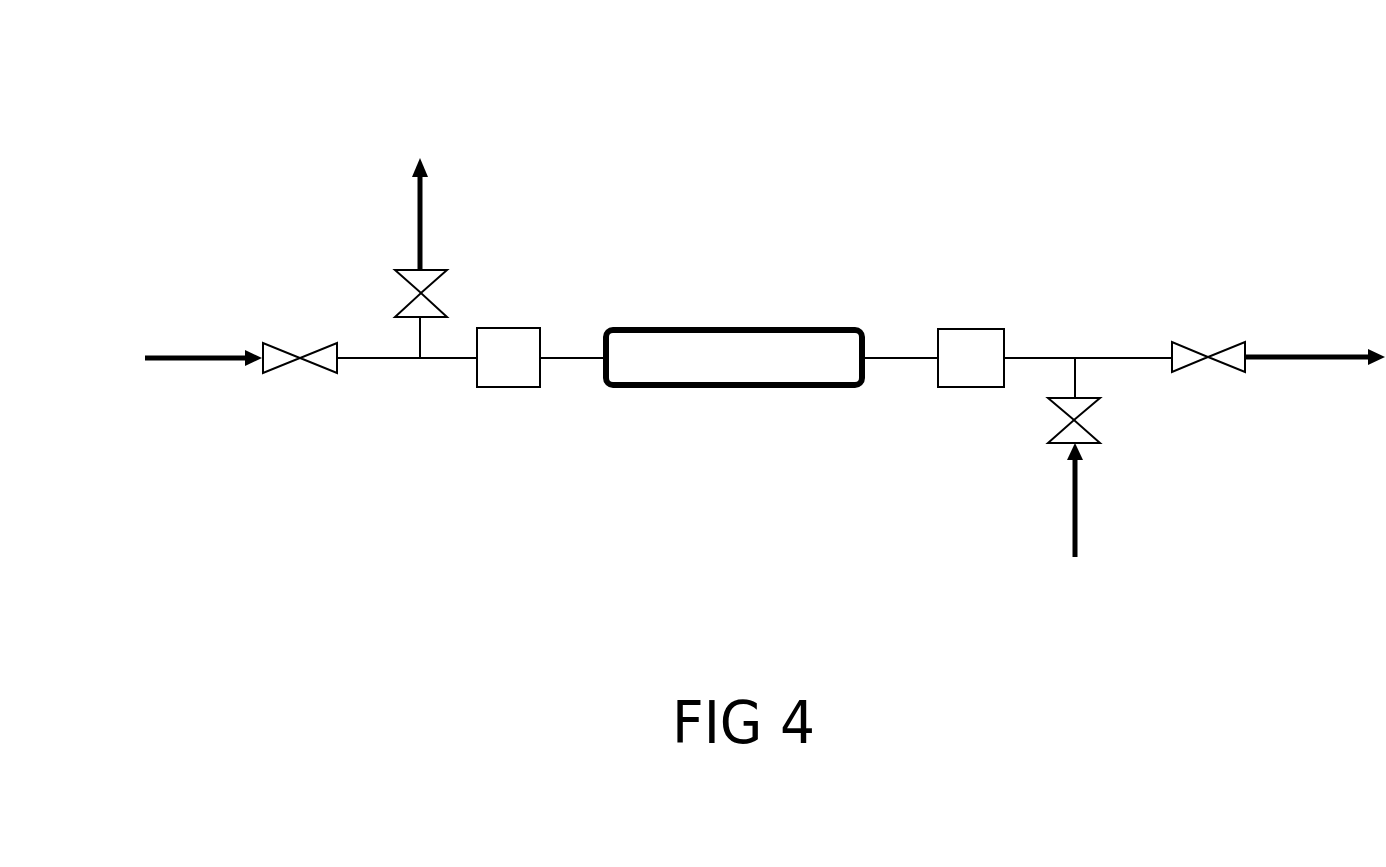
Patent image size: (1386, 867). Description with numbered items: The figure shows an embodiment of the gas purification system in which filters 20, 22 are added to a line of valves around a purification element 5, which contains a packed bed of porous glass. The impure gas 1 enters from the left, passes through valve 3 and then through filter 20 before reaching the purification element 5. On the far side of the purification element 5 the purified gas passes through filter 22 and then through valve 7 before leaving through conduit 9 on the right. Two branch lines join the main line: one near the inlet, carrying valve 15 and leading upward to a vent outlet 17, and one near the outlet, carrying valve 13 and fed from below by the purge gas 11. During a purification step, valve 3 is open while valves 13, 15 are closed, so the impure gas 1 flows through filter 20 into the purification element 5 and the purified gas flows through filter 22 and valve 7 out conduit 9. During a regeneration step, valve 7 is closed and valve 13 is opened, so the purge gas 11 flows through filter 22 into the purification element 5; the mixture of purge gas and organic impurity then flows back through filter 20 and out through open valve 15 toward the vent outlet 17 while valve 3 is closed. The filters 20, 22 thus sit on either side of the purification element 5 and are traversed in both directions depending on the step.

The impure gas 1 is at (203, 357).
The valve 3 is at (292, 350).
The purification element 5 is at (733, 327).
The valve 7 is at (1205, 353).
The conduit 9 is at (1340, 360).
The purge gas 11 is at (1071, 503).
The valve 13 is at (1065, 412).
The valve 15 is at (437, 280).
The vent outlet 17 is at (420, 228).
The filter 20 is at (508, 387).
The filter 22 is at (970, 329).